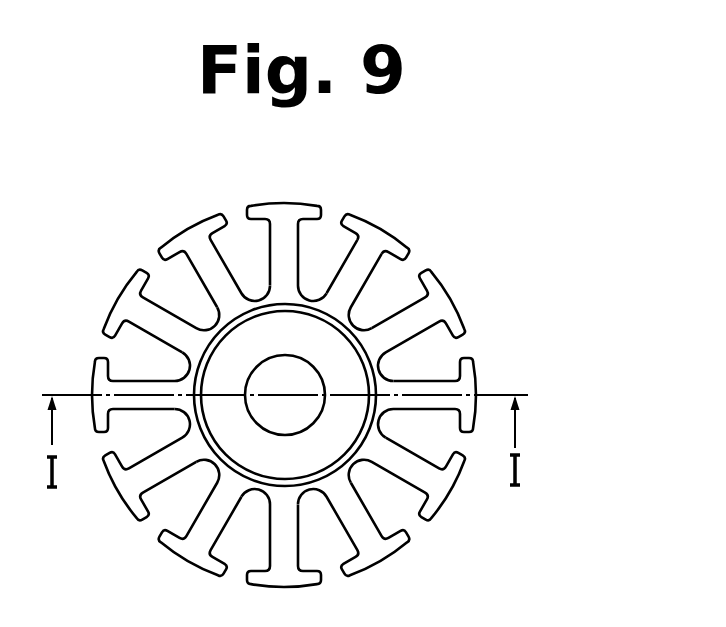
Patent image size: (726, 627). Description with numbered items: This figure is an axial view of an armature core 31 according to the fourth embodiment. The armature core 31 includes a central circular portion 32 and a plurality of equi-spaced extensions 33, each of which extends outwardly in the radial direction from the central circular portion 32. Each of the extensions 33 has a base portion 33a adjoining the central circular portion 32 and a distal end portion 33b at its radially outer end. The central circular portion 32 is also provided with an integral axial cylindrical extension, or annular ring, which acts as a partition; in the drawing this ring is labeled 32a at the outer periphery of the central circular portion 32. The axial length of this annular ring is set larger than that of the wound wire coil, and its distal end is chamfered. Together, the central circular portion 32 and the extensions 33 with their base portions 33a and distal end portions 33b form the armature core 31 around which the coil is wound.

The armature core 31 is at (248, 200).
The central circular portion 32 is at (233, 355).
The flange of bearing holder 32a is at (367, 355).
The extension 33 is at (478, 255).
The base portion 33a is at (345, 305).
The distal end portion 33b is at (390, 233).